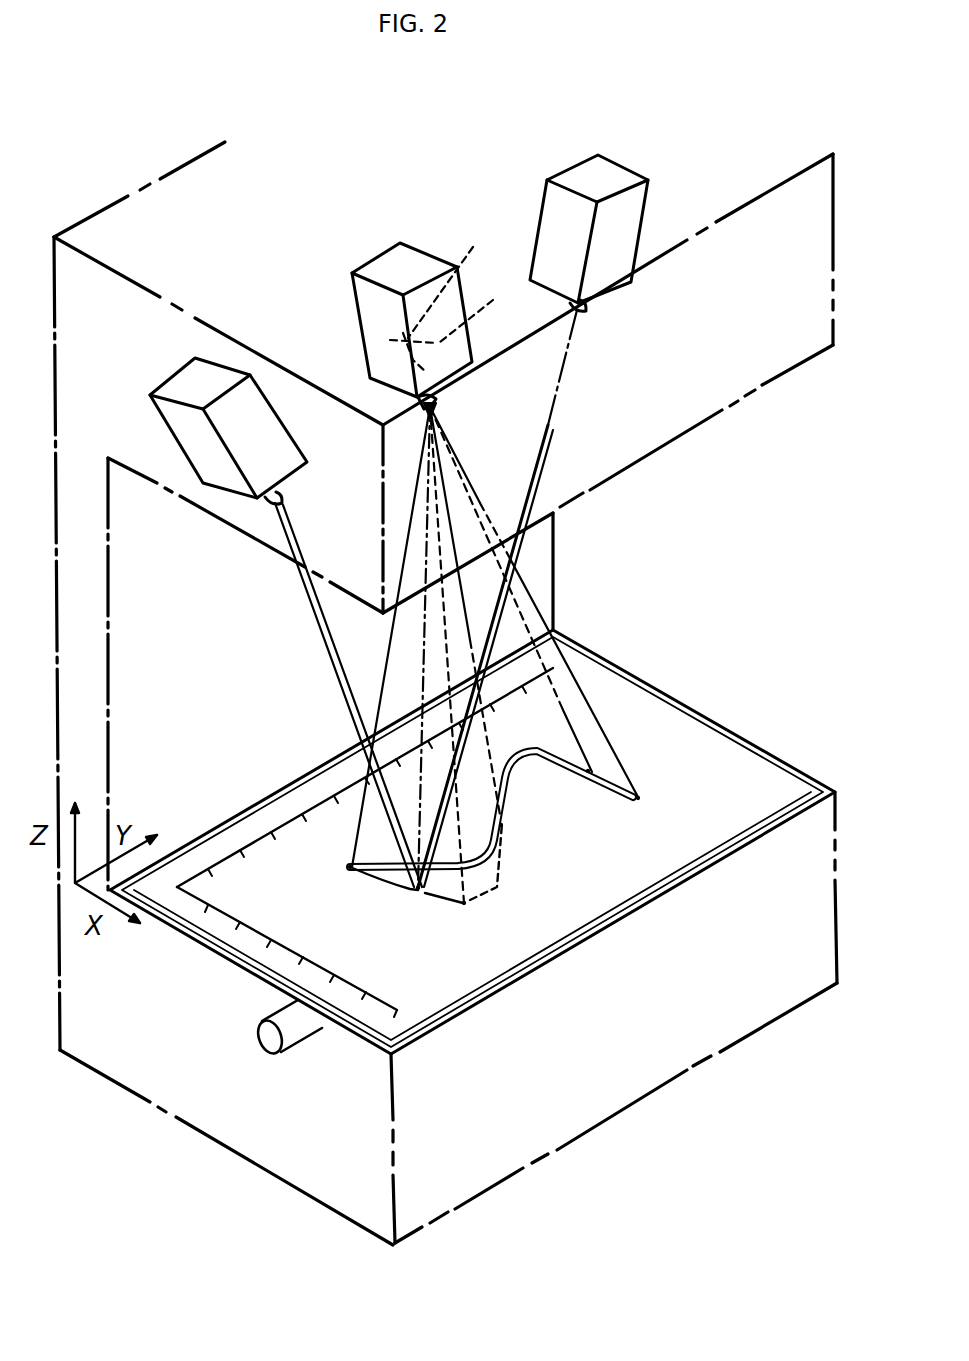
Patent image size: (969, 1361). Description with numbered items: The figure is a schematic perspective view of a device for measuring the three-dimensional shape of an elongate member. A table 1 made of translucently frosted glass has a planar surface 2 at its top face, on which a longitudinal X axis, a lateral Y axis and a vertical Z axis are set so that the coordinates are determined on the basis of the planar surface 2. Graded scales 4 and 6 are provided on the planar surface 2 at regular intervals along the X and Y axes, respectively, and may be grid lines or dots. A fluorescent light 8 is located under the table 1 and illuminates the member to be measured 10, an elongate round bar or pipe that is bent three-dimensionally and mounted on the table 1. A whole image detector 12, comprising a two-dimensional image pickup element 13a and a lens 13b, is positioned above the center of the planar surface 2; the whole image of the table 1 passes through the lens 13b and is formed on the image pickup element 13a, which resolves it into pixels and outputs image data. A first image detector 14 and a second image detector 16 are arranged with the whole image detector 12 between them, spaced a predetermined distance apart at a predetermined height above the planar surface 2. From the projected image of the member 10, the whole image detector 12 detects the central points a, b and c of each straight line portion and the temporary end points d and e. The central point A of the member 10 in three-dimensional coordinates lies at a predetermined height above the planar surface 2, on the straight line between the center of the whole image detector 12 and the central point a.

The table 1 is at (587, 967).
The planar surface 2 is at (753, 783).
The graded scale 4 is at (267, 942).
The graded scale 6 is at (290, 815).
The fluorescent light 8 is at (300, 1033).
The member to be measured 10 is at (560, 767).
The whole image detector 12 is at (362, 300).
The two-dimensional image pickup element 13a is at (452, 284).
The lens 13b is at (467, 326).
The first image detector 14 is at (192, 380).
The second image detector 16 is at (628, 253).
The central point a is at (418, 892).
The central point b is at (501, 827).
The central point c is at (588, 772).
The temporary end point d is at (350, 870).
The temporary end point e is at (640, 798).
The central point A is at (464, 905).